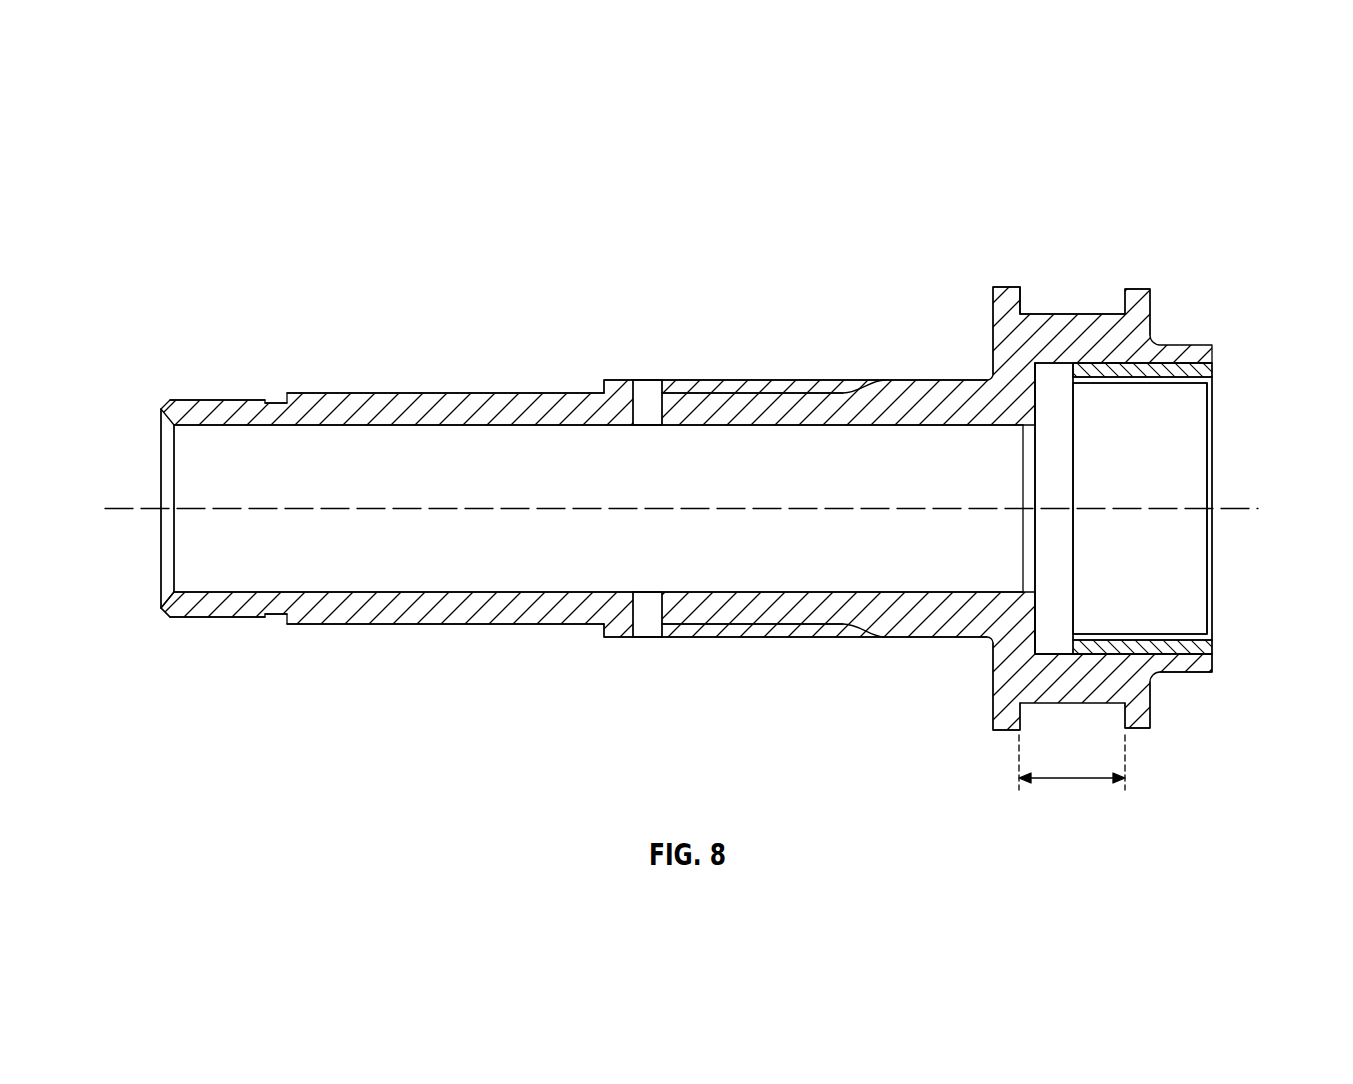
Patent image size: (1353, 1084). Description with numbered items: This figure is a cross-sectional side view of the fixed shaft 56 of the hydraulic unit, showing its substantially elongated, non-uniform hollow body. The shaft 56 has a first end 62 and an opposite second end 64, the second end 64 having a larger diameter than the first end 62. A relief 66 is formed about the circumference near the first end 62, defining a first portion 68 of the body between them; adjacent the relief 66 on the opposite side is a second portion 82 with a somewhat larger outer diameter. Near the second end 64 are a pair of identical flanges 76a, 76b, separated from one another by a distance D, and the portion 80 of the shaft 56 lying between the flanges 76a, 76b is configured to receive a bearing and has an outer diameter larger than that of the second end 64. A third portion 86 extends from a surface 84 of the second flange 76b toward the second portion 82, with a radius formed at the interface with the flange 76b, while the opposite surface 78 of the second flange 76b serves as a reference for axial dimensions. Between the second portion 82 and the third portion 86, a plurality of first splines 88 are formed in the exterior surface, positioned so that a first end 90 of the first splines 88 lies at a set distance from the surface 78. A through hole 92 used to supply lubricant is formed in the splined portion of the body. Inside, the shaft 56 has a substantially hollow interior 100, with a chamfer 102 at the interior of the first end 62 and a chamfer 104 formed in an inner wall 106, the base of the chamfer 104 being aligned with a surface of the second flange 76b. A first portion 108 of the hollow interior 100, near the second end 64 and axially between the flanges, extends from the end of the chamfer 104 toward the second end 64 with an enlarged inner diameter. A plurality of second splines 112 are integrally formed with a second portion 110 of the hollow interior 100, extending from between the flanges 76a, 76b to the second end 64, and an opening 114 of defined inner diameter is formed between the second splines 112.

The fixed shaft 56 is at (1138, 117).
The first end 62 is at (162, 605).
The second end 64 is at (1213, 663).
The relief 66 is at (280, 403).
The first portion 68 is at (212, 398).
The first flange 76a is at (1137, 731).
The second flange 76b is at (1003, 731).
The surface of second flange 78 is at (1022, 300).
The portion between flanges 80 is at (1112, 314).
The second portion 82 is at (397, 393).
The surface of second flange 84 is at (993, 306).
The third portion 86 is at (898, 645).
The first splines 88 is at (745, 379).
The first end of first splines 90 is at (602, 380).
The through hole 92 is at (646, 632).
The hollow interior 100 is at (393, 558).
The chamfer 102 is at (161, 421).
The chamfer 104 is at (1215, 378).
The inner wall 106 is at (1037, 398).
The first portion of hollow interior 108 is at (1057, 637).
The second portion of hollow interior 110 is at (1190, 502).
The second splines 112 is at (1150, 365).
The opening 114 is at (1177, 450).
The distance between flanges D is at (1068, 780).